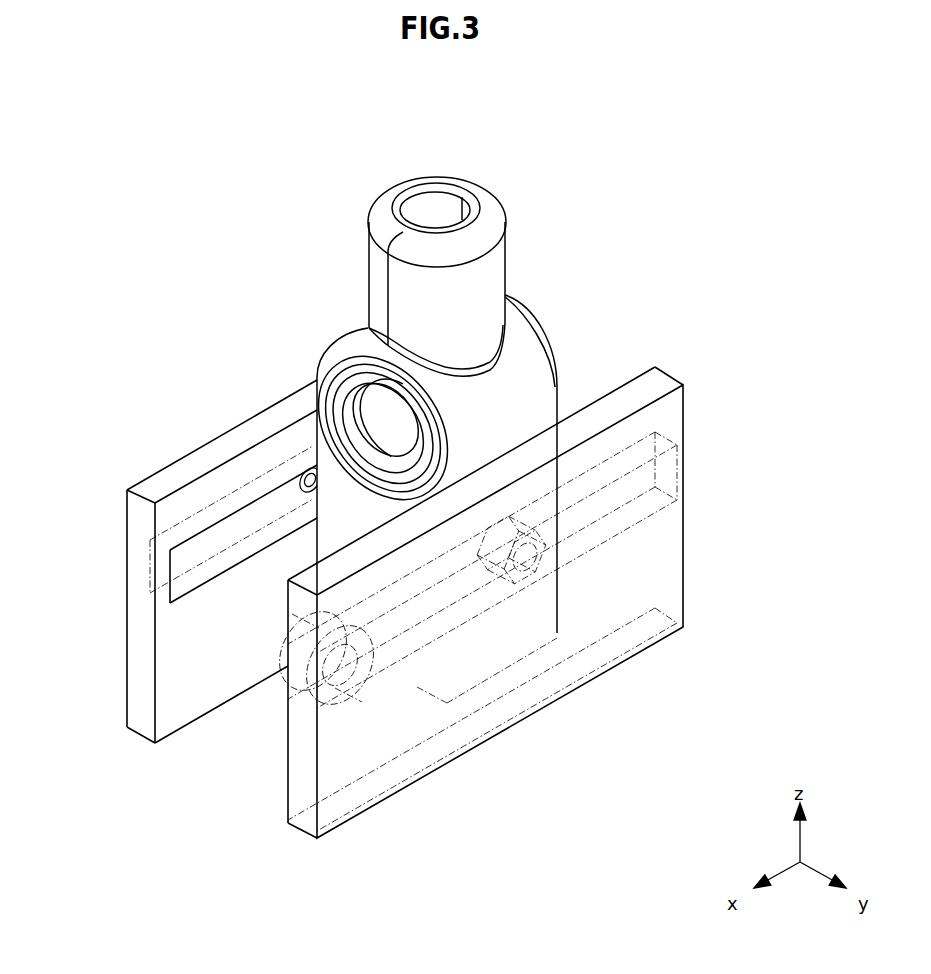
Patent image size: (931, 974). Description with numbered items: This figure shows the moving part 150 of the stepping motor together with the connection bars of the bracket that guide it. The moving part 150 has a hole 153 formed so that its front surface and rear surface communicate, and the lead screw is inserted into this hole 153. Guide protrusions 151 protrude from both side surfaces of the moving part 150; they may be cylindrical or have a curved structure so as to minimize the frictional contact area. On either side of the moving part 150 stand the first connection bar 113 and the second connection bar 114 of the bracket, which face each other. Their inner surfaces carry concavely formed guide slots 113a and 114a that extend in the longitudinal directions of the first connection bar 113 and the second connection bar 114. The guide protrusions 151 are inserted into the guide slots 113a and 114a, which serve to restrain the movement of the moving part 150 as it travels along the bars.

The first connection bar 113 is at (181, 561).
The guide slot 113a is at (196, 541).
The second connection bar 114 is at (541, 567).
The guide slot 114a is at (648, 467).
The moving part 150 is at (395, 409).
The guide protrusions 151 is at (300, 482).
The hole 153 is at (333, 399).